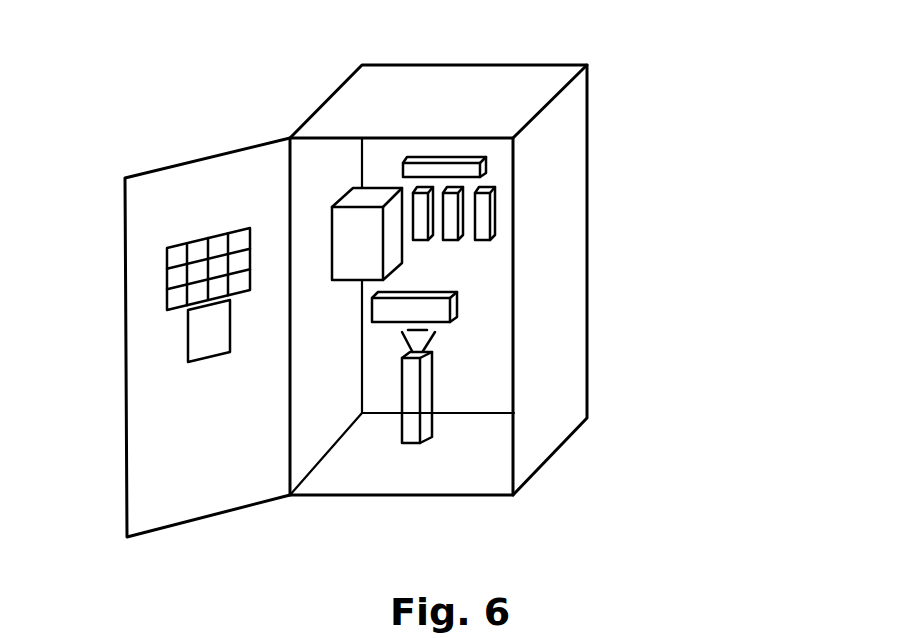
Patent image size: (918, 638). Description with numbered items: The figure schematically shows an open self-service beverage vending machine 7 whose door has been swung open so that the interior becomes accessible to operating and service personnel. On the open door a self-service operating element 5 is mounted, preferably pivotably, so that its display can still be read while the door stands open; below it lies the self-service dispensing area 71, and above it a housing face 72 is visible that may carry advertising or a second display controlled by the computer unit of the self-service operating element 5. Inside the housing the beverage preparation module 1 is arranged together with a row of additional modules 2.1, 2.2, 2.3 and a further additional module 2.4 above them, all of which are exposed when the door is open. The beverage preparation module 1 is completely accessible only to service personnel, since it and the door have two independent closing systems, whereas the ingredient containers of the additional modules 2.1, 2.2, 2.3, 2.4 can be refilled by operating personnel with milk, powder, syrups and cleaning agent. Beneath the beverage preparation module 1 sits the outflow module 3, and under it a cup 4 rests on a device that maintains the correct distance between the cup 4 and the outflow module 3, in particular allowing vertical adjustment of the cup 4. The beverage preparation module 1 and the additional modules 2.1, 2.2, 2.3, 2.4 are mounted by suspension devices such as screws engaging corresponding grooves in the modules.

The self-service beverage vending machine 7 is at (252, 90).
The housing face 72 is at (187, 508).
The self-service operating element 5 is at (177, 280).
The self-service dispensing area 71 is at (198, 342).
The beverage preparation module 1 is at (393, 258).
The additional module 2.4 is at (445, 167).
The additional module 2.1 is at (423, 230).
The additional module 2.2 is at (455, 209).
The additional module 2.3 is at (487, 197).
The outflow module 3 is at (457, 303).
The cup 4 is at (430, 342).